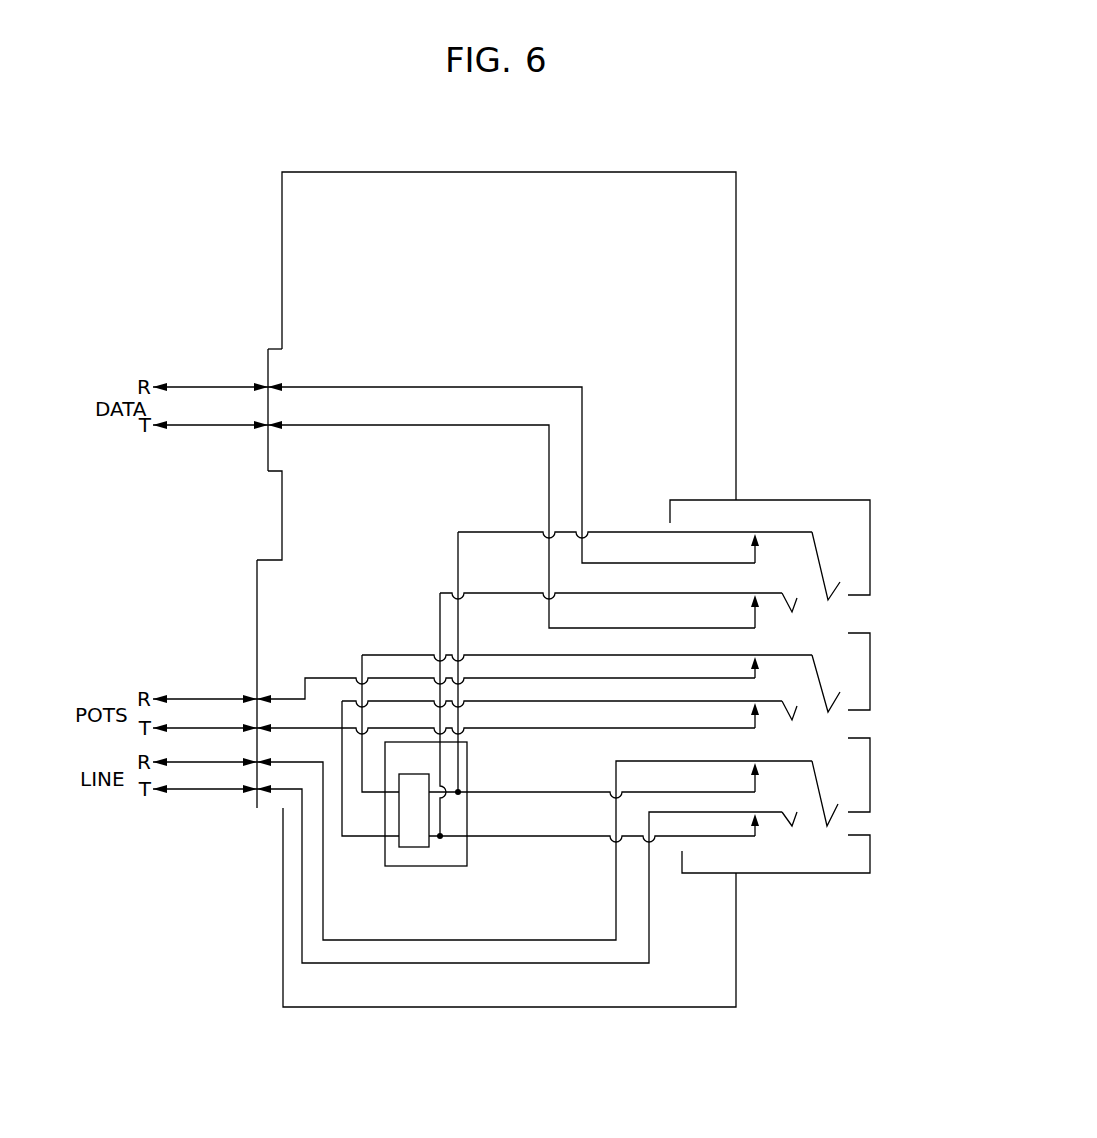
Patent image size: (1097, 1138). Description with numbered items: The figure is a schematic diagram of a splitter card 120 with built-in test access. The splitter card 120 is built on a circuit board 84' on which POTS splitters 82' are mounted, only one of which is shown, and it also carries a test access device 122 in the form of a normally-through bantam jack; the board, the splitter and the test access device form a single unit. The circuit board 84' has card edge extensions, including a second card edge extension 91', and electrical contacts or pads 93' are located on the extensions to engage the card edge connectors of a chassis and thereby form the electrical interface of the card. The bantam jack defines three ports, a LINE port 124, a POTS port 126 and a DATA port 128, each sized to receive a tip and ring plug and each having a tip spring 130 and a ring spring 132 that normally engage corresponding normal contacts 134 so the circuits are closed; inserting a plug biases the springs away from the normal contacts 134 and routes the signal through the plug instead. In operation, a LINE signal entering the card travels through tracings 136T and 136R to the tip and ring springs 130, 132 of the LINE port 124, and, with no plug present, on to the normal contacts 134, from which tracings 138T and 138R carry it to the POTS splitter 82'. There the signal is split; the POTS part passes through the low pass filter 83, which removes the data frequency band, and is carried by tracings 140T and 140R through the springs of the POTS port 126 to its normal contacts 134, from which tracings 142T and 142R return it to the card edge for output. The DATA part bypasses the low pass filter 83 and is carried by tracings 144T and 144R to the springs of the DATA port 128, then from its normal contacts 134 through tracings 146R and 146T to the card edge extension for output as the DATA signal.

The splitter card 120 is at (670, 114).
The circuit board 84' is at (496, 566).
The second card edge extension 91' is at (234, 323).
The electrical contacts/pads 93' is at (277, 588).
The tracing 146R is at (411, 386).
The tracing 146T is at (332, 427).
The tracing 144R is at (480, 531).
The tracing 144T is at (444, 592).
The tracing 140R is at (392, 653).
The tracing 140T is at (354, 838).
The tracing 142R is at (305, 677).
The tracing 142T is at (491, 730).
The tracing 138R is at (566, 790).
The tracing 138T is at (517, 839).
The tracing 136R is at (373, 942).
The tracing 136T is at (490, 965).
The test access device 122 is at (776, 499).
The DATA port 128 is at (862, 631).
The POTS port 126 is at (858, 740).
The LINE port 124 is at (862, 834).
The ring spring 132 is at (818, 552).
The tip spring 130 is at (840, 586).
The normal contact 134 is at (757, 556).
The low pass filter 83 is at (417, 848).
The POTS splitter 82' is at (433, 826).